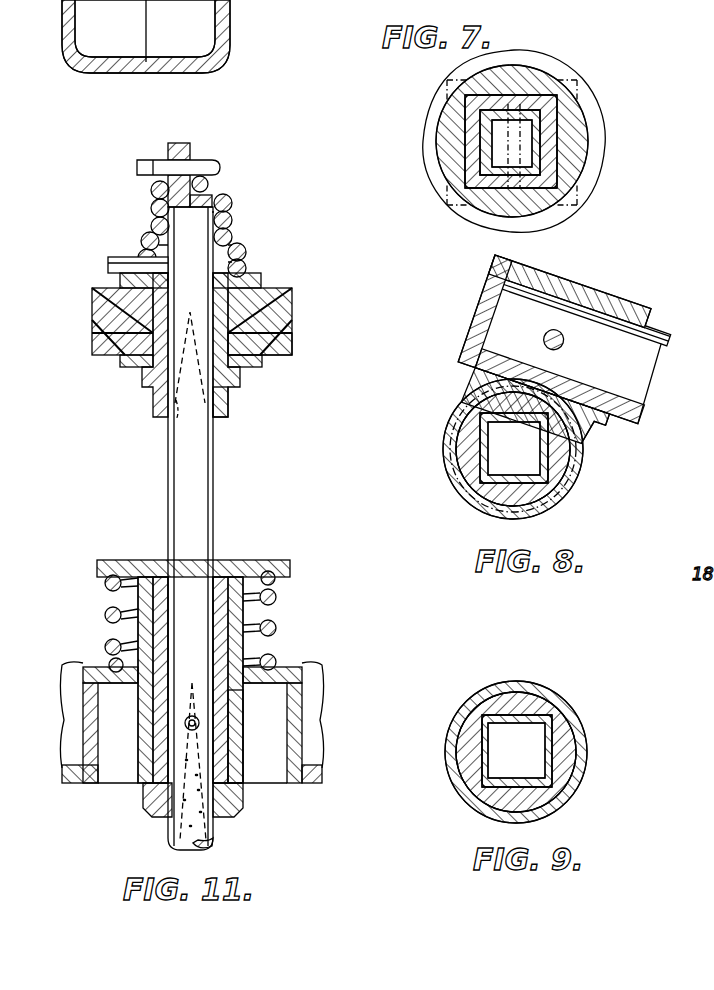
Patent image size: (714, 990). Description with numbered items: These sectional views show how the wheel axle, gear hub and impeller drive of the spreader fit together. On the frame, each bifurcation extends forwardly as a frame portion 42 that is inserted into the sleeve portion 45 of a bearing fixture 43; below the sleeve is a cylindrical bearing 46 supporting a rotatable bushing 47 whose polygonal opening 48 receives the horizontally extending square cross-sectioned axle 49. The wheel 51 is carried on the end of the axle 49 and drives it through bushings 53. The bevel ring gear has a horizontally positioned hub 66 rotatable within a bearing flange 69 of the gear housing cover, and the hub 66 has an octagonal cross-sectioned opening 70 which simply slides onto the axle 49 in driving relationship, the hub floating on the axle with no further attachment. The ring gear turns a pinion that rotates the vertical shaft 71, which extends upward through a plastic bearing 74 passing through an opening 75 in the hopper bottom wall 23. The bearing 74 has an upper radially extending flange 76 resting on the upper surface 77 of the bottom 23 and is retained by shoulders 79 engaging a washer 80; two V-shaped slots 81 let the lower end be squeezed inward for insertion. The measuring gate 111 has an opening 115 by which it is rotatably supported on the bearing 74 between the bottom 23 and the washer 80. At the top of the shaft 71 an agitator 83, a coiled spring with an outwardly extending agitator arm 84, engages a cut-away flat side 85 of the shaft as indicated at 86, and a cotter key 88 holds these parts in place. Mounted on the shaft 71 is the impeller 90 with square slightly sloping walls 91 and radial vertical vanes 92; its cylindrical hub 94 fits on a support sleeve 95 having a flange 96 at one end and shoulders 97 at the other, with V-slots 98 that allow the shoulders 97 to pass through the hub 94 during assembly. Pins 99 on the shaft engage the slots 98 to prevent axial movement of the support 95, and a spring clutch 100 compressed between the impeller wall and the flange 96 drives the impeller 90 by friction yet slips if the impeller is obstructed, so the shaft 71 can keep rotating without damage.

In FIG. 11, the bottom wall 23 is at (300, 318).
In FIG. 8, the frame portion 42 is at (660, 345).
In FIG. 8, the bearing fixture 43 is at (445, 410).
In FIG. 8, the sleeve portion 45 is at (598, 300).
In FIG. 8, the cylindrical bearing 46 is at (572, 460).
In FIG. 8, the rotatable bushing 47 is at (560, 486).
In FIG. 8, the polygonal opening 48 is at (472, 500).
In FIG. 7, the axle 49 is at (484, 147).
In FIG. 8, the axle 49 is at (485, 462).
In FIG. 9, the axle 49 is at (470, 782).
In FIG. 7, the wheel 51 is at (552, 66).
In FIG. 7, the bushings 53 is at (548, 140).
In FIG. 9, the hub 66 is at (555, 702).
In FIG. 9, the bearing flange 69 is at (500, 690).
In FIG. 9, the octagonal opening 70 is at (568, 745).
In FIG. 11, the vertical shaft 71 is at (172, 479).
In FIG. 11, the bearing 74 is at (262, 305).
In FIG. 11, the opening 75 is at (125, 302).
In FIG. 11, the radially extending flange 76 is at (255, 272).
In FIG. 11, the upper surface 77 is at (290, 292).
In FIG. 11, the shoulders 79 is at (150, 378).
In FIG. 11, the washer 80 is at (122, 364).
In FIG. 11, the V-shaped slots 81 is at (172, 420).
In FIG. 11, the agitator 83 is at (235, 210).
In FIG. 11, the agitator arm 84 is at (122, 262).
In FIG. 11, the flat side 85 is at (190, 150).
In FIG. 11, the spring engagement 86 is at (208, 186).
In FIG. 11, the cotter key 88 is at (150, 164).
In FIG. 11, the impeller 90 is at (324, 775).
In FIG. 11, the walls 91 is at (66, 772).
In FIG. 11, the vanes 92 is at (73, 720).
In FIG. 11, the hub 94 is at (240, 772).
In FIG. 11, the support sleeve 95 is at (232, 651).
In FIG. 11, the flange 96 is at (128, 560).
In FIG. 11, the shoulders 97 is at (150, 800).
In FIG. 11, the V-slots 98 is at (92, 667).
In FIG. 11, the pins 99 is at (184, 723).
In FIG. 11, the spring clutch 100 is at (112, 612).
In FIG. 11, the measuring gate 111 is at (268, 346).
In FIG. 11, the opening 115 is at (240, 385).